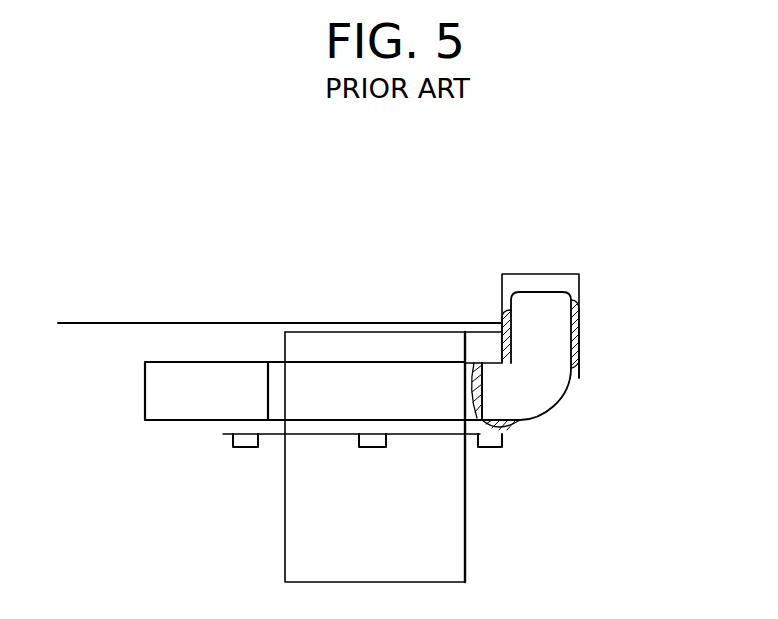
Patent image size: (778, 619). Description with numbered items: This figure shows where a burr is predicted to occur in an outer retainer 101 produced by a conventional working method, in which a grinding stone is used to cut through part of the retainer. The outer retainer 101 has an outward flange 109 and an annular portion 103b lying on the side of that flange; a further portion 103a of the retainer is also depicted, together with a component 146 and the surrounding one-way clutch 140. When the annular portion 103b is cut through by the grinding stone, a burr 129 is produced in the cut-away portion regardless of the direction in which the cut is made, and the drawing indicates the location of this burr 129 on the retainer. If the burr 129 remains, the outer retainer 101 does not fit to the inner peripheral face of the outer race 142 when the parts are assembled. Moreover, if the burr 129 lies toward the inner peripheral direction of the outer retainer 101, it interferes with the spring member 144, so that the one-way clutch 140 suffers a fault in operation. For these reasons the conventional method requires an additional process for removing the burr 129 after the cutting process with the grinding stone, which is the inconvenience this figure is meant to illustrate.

The outer retainer 101 is at (354, 406).
The first plate portion 103a is at (172, 426).
The annular portion 103b is at (578, 381).
The outward flange 109 is at (540, 316).
The burr 129 is at (473, 365).
The one-way clutch 140 is at (579, 250).
The outer race 142 is at (88, 310).
The spring member 144 is at (272, 438).
The component 146 is at (440, 528).